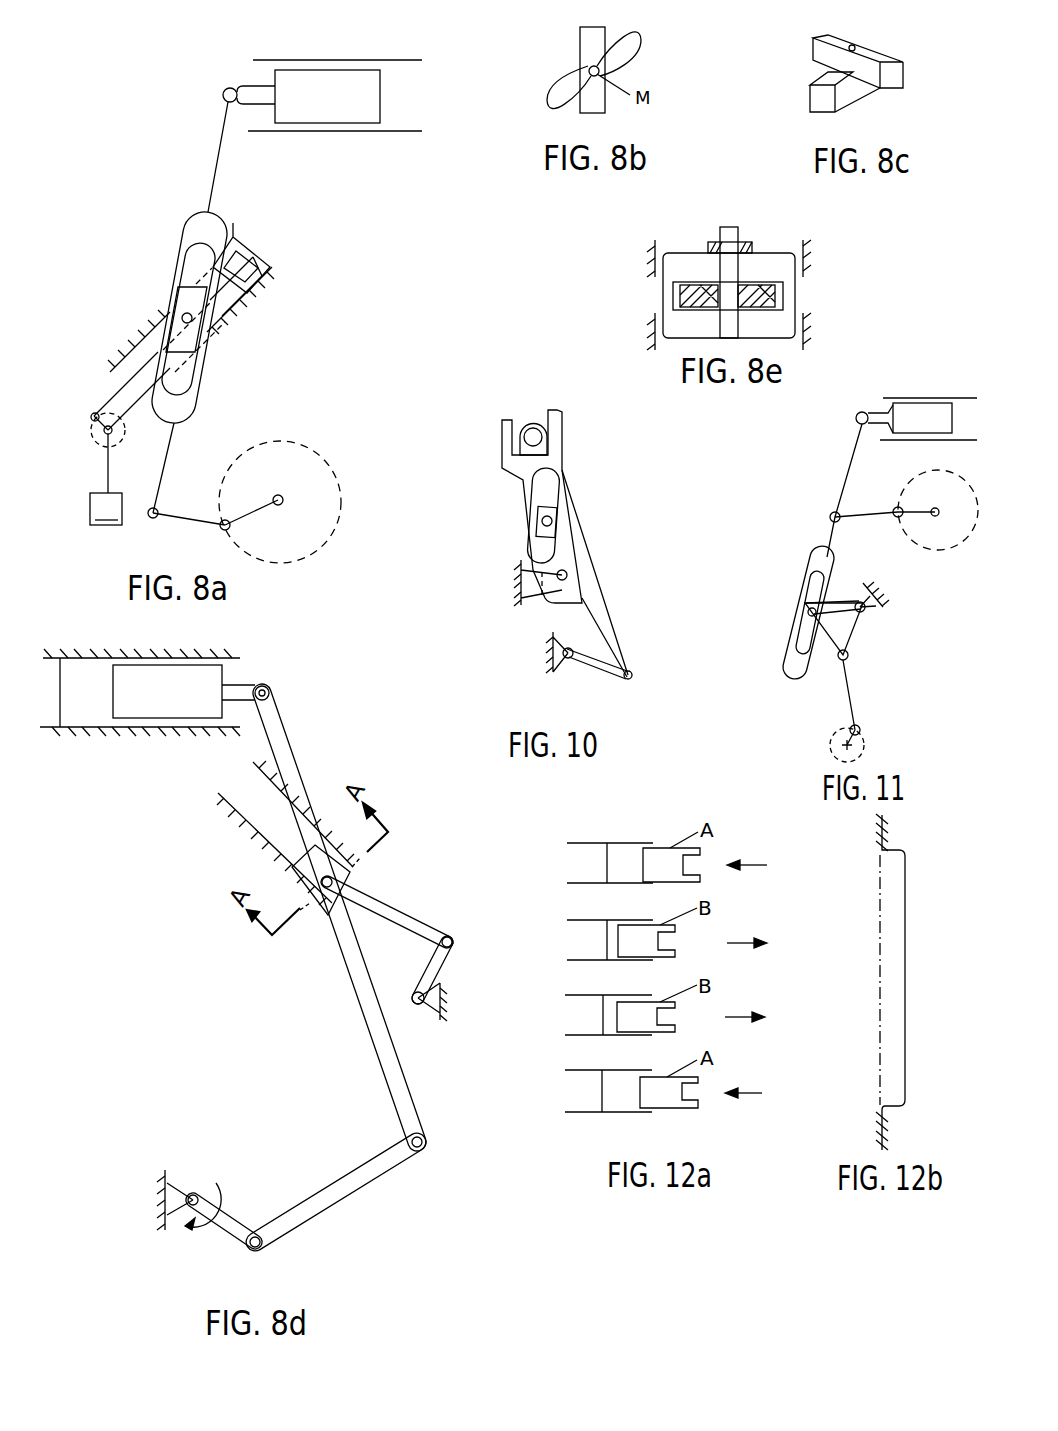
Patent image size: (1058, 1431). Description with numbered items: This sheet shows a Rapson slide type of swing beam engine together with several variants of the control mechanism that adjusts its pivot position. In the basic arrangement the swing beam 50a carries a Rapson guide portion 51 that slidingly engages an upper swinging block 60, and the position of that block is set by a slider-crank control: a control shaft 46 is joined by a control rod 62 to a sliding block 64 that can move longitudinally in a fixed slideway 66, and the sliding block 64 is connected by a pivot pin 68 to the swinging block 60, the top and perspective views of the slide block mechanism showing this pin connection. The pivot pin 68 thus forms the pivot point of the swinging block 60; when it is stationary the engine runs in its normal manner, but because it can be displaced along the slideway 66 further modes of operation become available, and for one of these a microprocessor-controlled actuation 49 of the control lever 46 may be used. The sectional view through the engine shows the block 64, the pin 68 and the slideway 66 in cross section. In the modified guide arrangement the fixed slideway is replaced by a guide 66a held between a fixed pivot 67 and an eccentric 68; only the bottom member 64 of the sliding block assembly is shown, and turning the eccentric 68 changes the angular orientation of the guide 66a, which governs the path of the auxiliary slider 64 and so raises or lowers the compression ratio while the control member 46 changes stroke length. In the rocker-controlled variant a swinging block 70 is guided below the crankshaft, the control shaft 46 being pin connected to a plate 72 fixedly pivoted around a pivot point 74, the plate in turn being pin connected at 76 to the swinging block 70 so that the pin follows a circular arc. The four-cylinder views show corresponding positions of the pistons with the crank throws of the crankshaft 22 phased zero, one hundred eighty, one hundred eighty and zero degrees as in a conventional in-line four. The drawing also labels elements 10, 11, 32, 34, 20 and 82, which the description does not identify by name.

In FIG. 8a, the cylinder 10 is at (373, 60).
In FIG. 8d, the cylinder 10 is at (105, 657).
In FIG. 8a, the piston 11 is at (305, 77).
In FIG. 8d, the piston 11 is at (187, 675).
In FIG. 8a, the piston rod pivot pin 32 is at (222, 92).
In FIG. 8d, the piston rod pivot pin 32 is at (268, 692).
In FIG. 8a, the swing beam 50a is at (220, 168).
In FIG. 8d, the swing beam 50a is at (403, 1068).
In FIG. 8a, the upper swinging block 60 is at (197, 285).
In FIG. 8b, the upper swinging block 60 is at (588, 43).
In FIG. 8c, the upper swinging block 60 is at (902, 77).
In FIG. 8e, the upper swinging block 60 is at (743, 290).
In FIG. 8a, the pivot pin 68 is at (183, 317).
In FIG. 8b, the pivot pin 68 is at (590, 70).
In FIG. 8c, the pivot pin 68 is at (853, 47).
In FIG. 8e, the pivot pin 68 is at (730, 225).
In FIG. 10, the pivot pin 68 is at (522, 437).
In FIG. 8a, the fixed slideway 66 is at (260, 280).
In FIG. 8e, the fixed slideway 66 is at (650, 243).
In FIG. 8d, the fixed slideway 66 is at (225, 803).
In FIG. 10, the guide 66a is at (558, 453).
In FIG. 8a, the sliding block 64 is at (225, 300).
In FIG. 8b, the sliding block 64 is at (630, 52).
In FIG. 8c, the sliding block 64 is at (852, 97).
In FIG. 8e, the sliding block 64 is at (667, 293).
In FIG. 10, the sliding block 64 is at (552, 508).
In FIG. 8d, the sliding block 64 is at (332, 920).
In FIG. 8a, the Rapson guide portion 51 is at (183, 373).
In FIG. 8e, the Rapson guide portion 51 is at (777, 295).
In FIG. 8a, the control rod 62 is at (112, 398).
In FIG. 8e, the control rod 62 is at (710, 245).
In FIG. 10, the control rod 62 is at (607, 630).
In FIG. 8d, the control rod 62 is at (408, 913).
In FIG. 8a, the control shaft 46 is at (102, 430).
In FIG. 10, the control shaft 46 is at (592, 663).
In FIG. 11, the control shaft 46 is at (860, 743).
In FIG. 8d, the control shaft 46 is at (443, 965).
In FIG. 8a, the microprocessor-controlled actuation 49 is at (106, 479).
In FIG. 8a, the pivot pin 34 is at (150, 520).
In FIG. 8d, the pivot pin 34 is at (423, 1140).
In FIG. 8a, the connecting link 20 is at (180, 515).
In FIG. 11, the connecting link 20 is at (863, 513).
In FIG. 8d, the connecting link 20 is at (342, 1200).
In FIG. 8a, the crankshaft 22 is at (257, 507).
In FIG. 11, the crankshaft 22 is at (920, 510).
In FIG. 8d, the crankshaft 22 is at (235, 1215).
In FIG. 10, the fixed pivot 67 is at (565, 572).
In FIG. 11, the swinging block 70 is at (800, 622).
In FIG. 11, the plate 72 is at (853, 635).
In FIG. 11, the pivot point 74 is at (860, 602).
In FIG. 11, the pin connection 76 is at (810, 610).
In FIG. 12b, the guide rail 82 is at (903, 1057).